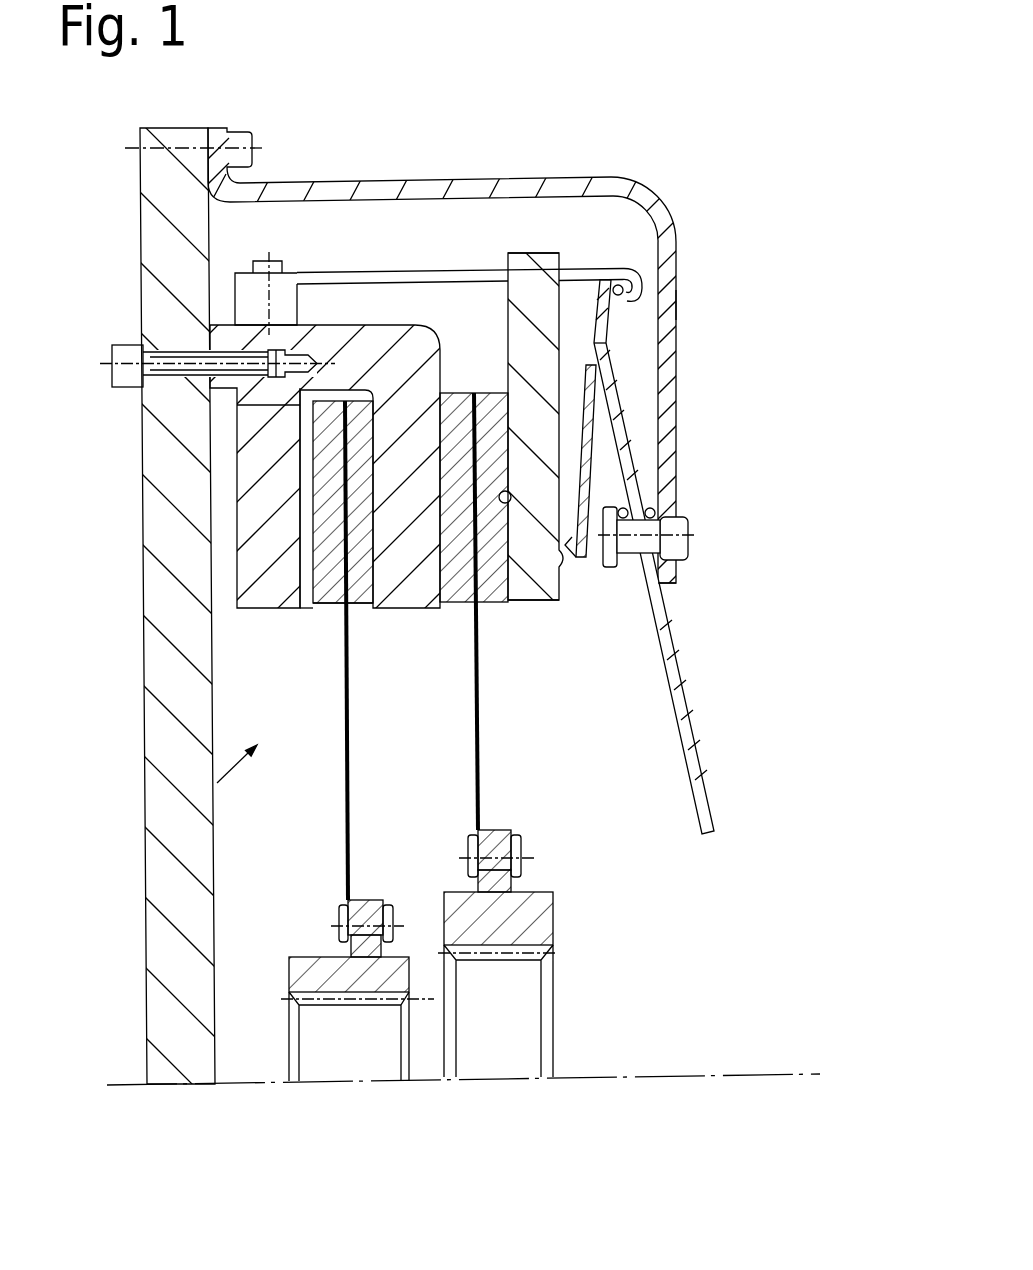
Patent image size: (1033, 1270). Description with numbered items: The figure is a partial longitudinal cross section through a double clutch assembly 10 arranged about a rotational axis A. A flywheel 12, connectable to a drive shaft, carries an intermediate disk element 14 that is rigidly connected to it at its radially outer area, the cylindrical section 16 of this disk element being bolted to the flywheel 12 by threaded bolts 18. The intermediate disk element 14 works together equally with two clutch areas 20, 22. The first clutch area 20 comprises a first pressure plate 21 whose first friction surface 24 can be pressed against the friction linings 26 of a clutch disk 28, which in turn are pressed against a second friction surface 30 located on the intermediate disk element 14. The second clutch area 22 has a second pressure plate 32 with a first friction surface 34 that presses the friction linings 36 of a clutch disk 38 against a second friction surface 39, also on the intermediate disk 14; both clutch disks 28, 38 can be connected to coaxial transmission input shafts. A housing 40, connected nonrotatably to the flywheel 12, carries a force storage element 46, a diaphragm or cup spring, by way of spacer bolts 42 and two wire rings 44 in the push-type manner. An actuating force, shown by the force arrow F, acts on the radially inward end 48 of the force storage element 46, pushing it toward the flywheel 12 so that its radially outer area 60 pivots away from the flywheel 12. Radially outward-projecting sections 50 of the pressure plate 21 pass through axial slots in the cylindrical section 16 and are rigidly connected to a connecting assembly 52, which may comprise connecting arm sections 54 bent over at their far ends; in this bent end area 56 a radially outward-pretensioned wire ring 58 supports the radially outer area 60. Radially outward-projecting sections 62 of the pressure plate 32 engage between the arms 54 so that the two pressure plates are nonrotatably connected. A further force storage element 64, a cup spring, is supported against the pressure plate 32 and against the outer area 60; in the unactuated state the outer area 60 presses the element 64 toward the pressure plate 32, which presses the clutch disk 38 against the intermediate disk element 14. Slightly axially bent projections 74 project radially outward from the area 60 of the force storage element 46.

The double clutch assembly 10 is at (768, 153).
The flywheel 12 is at (198, 983).
The intermediate disk element 14 is at (397, 522).
The cylindrical section 16 is at (243, 340).
The threaded bolts 18 is at (110, 366).
The first clutch area 20 is at (333, 603).
The first pressure plate 21 is at (268, 588).
The second clutch area 22 is at (579, 733).
The first friction surface 24 is at (306, 604).
The friction linings 26 is at (333, 603).
The clutch disk 28 is at (320, 817).
The second friction surface 30 is at (373, 538).
The second pressure plate 32 is at (545, 410).
The first friction surface 34 is at (520, 500).
The friction linings 36 is at (517, 600).
The clutch disk 38 is at (586, 855).
The second friction surface 39 is at (480, 562).
The housing 40 is at (666, 296).
The spacer bolts 42 is at (686, 522).
The wire rings 44 is at (657, 508).
The force storage element 46 is at (670, 687).
The radially inward end 48 is at (700, 763).
The radially outward-projecting sections 50 is at (289, 297).
The connecting assembly 52 is at (468, 275).
The connecting arm sections 54 is at (619, 284).
The bent end area 56 is at (642, 302).
The wire ring 58 is at (656, 266).
The radially outer area 60 is at (629, 327).
The radially outward-projecting sections 62 is at (542, 283).
The force storage element 64 is at (597, 450).
The projections 74 is at (601, 342).
The rotational axis A is at (722, 1076).
The force arrow F is at (764, 802).